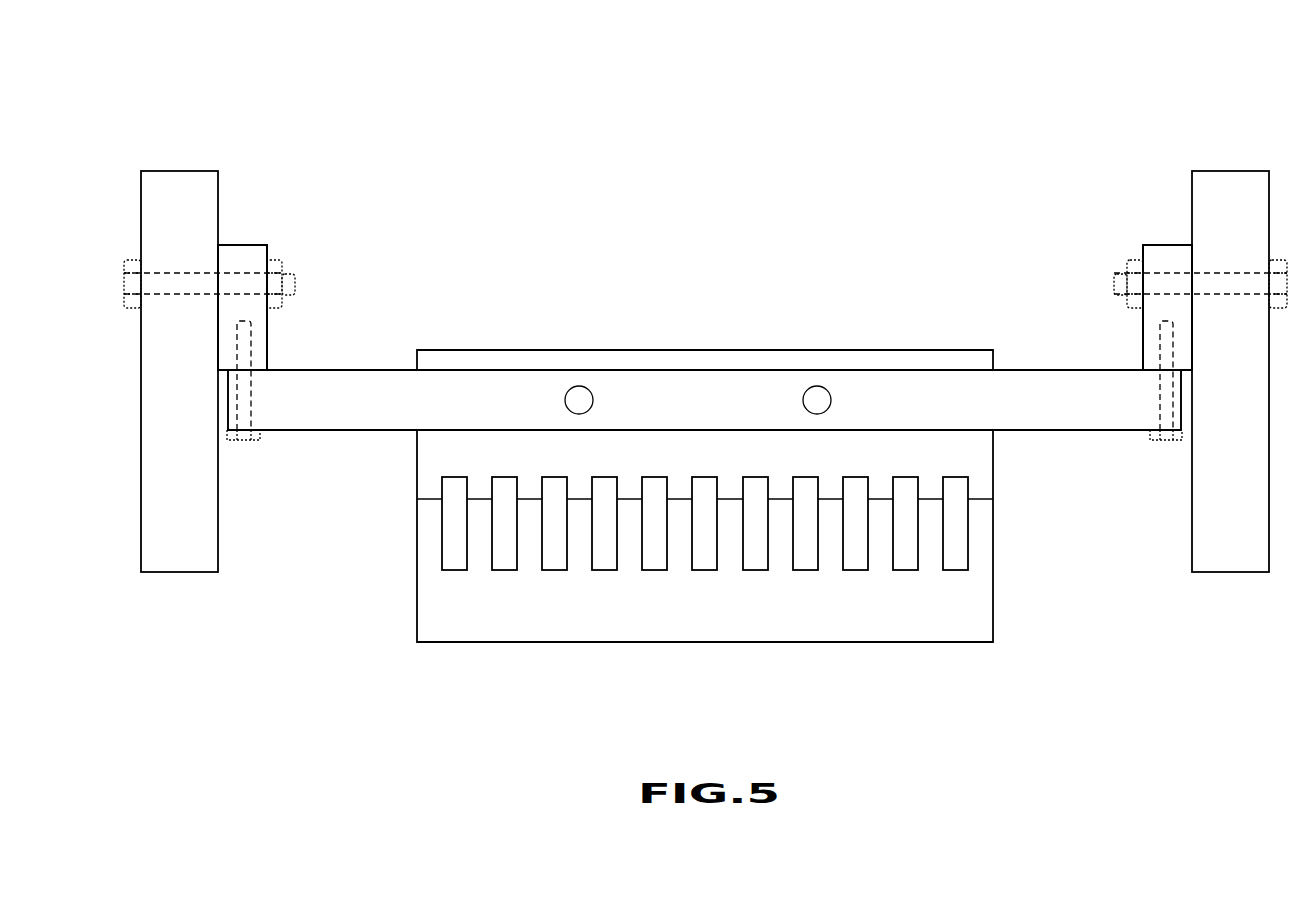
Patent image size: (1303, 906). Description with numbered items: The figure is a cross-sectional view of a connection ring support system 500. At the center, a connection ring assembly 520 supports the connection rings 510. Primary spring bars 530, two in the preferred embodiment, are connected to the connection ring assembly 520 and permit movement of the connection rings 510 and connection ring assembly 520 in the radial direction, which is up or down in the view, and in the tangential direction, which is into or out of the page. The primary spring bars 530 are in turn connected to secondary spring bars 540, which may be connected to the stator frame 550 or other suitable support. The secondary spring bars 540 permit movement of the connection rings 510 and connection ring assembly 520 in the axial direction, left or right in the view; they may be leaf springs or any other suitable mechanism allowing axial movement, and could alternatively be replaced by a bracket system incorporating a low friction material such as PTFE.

The connection ring support system 500 is at (844, 115).
The connection rings 510 is at (955, 558).
The connection ring assembly 520 is at (610, 630).
The primary spring bars 530 is at (335, 415).
The secondary spring bars 540 is at (253, 258).
The stator frame 550 is at (202, 190).